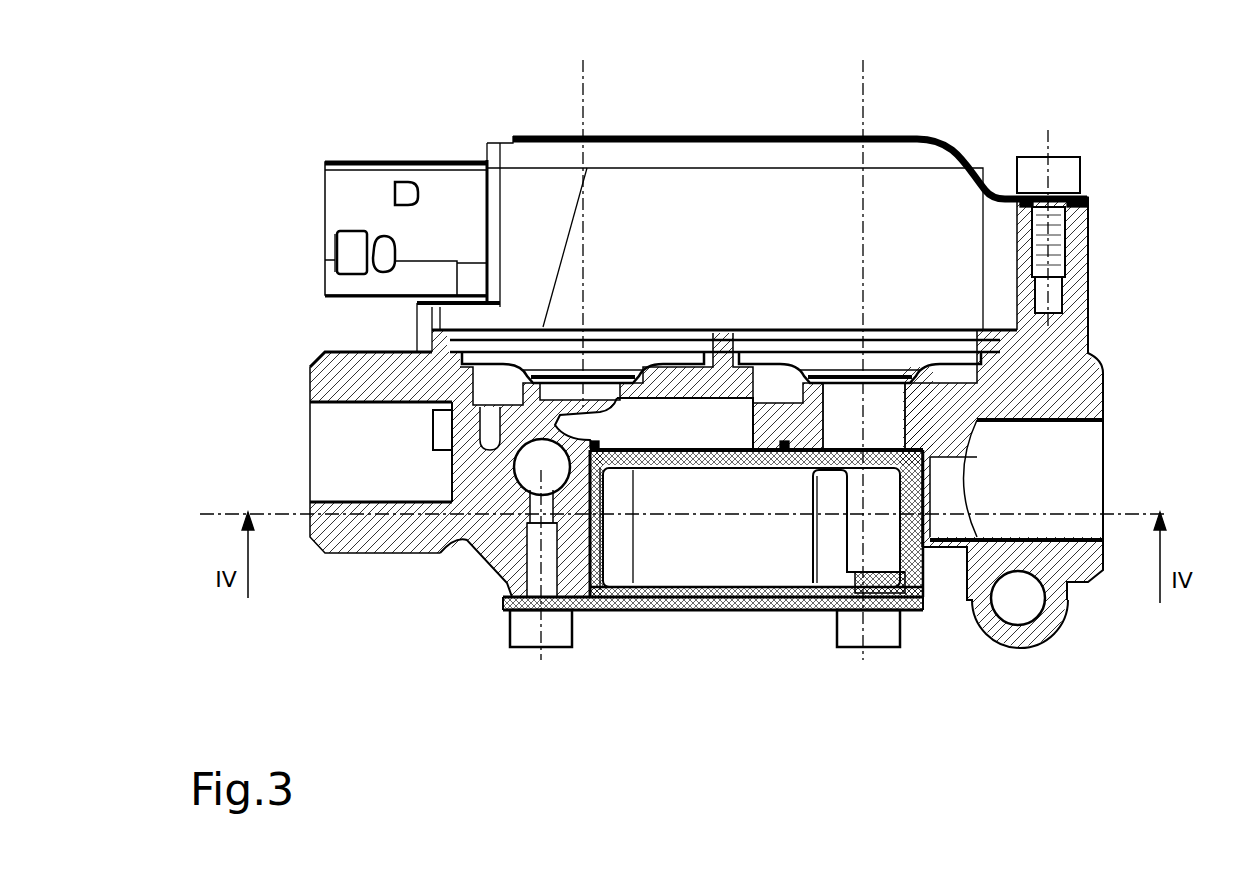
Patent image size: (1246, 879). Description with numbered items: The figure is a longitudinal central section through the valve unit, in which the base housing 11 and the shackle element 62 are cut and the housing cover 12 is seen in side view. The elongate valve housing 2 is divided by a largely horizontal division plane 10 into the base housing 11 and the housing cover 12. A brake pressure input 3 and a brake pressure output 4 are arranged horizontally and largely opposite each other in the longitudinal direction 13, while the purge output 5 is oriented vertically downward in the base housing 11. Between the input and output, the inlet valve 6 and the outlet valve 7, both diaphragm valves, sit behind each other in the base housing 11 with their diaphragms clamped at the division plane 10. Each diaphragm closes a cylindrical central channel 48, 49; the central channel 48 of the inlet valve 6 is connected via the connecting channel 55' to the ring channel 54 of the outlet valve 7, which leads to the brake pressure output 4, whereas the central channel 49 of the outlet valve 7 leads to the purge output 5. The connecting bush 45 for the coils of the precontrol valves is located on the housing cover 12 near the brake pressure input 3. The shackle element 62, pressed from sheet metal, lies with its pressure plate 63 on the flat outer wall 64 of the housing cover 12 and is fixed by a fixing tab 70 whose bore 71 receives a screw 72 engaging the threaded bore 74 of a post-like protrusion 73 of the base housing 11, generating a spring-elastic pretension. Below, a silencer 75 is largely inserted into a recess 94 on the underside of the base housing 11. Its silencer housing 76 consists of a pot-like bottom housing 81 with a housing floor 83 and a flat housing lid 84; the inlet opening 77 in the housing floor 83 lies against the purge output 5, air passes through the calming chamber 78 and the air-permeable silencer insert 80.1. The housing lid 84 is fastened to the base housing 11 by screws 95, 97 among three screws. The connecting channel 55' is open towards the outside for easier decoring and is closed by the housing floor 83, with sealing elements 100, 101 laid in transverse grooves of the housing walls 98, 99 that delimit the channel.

The valve housing 2 is at (724, 182).
The brake pressure input 3 is at (360, 478).
The brake pressure output 4 is at (1030, 497).
The purge output 5 is at (844, 422).
The inlet valve 6 is at (583, 220).
The outlet valve 7 is at (860, 346).
The division plane 10 is at (378, 331).
The base housing 11 is at (493, 540).
The housing cover 12 is at (777, 273).
The longitudinal direction 13 is at (672, 102).
The connecting bush 45 is at (372, 210).
The central channel 48 is at (560, 408).
The central channel 49 is at (805, 432).
The ring channel 54 is at (950, 380).
The connecting channel 55' is at (654, 423).
The shackle element 62 is at (800, 116).
The pressure plate 63 is at (652, 130).
The outer wall 64 is at (500, 135).
The fixing tab 70 is at (1000, 192).
The bore 71 is at (1092, 200).
The screw 72 is at (1060, 178).
The post-like protrusion 73 is at (1071, 303).
The threaded bore 74 is at (1066, 260).
The silencer 75 is at (713, 632).
The silencer housing 76 is at (820, 610).
The inlet opening 77 is at (877, 463).
The calming chamber 78 is at (711, 556).
The silencer insert 80.1 is at (615, 527).
The bottom housing 81 is at (903, 610).
The housing floor 83 is at (683, 537).
The housing lid 84 is at (788, 470).
The recess 94 is at (585, 540).
The screw 95 is at (522, 628).
The screw 97 is at (887, 630).
The housing wall 98 is at (563, 470).
The housing wall 99 is at (875, 425).
The sealing element 100 is at (613, 600).
The sealing element 101 is at (797, 613).